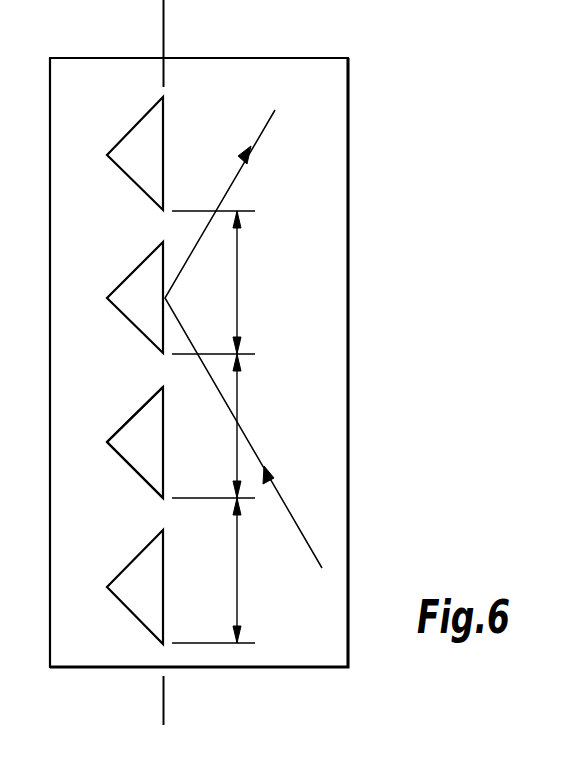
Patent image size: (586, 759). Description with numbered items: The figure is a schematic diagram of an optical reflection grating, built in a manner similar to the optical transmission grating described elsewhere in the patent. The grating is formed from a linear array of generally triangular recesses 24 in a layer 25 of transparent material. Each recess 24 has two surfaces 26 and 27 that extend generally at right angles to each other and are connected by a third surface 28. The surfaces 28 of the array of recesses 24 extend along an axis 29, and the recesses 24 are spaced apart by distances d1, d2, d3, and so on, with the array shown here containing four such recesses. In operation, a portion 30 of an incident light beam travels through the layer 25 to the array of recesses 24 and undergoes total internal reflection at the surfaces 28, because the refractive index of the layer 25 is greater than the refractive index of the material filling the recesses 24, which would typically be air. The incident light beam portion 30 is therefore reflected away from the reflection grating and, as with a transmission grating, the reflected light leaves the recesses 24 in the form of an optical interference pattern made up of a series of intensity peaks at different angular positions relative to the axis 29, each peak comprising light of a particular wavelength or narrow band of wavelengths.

The triangular recess 24 is at (133, 143).
The layer of transparent material 25 is at (332, 100).
The first surface of recess 26 is at (131, 420).
The second surface of recess 27 is at (131, 465).
The third surface of recess 28 is at (165, 443).
The axis 29 is at (165, 22).
The portion of incident light beam 30 is at (281, 495).
The spacing distance d1 is at (238, 282).
The spacing distance d2 is at (238, 400).
The spacing distance d3 is at (238, 577).